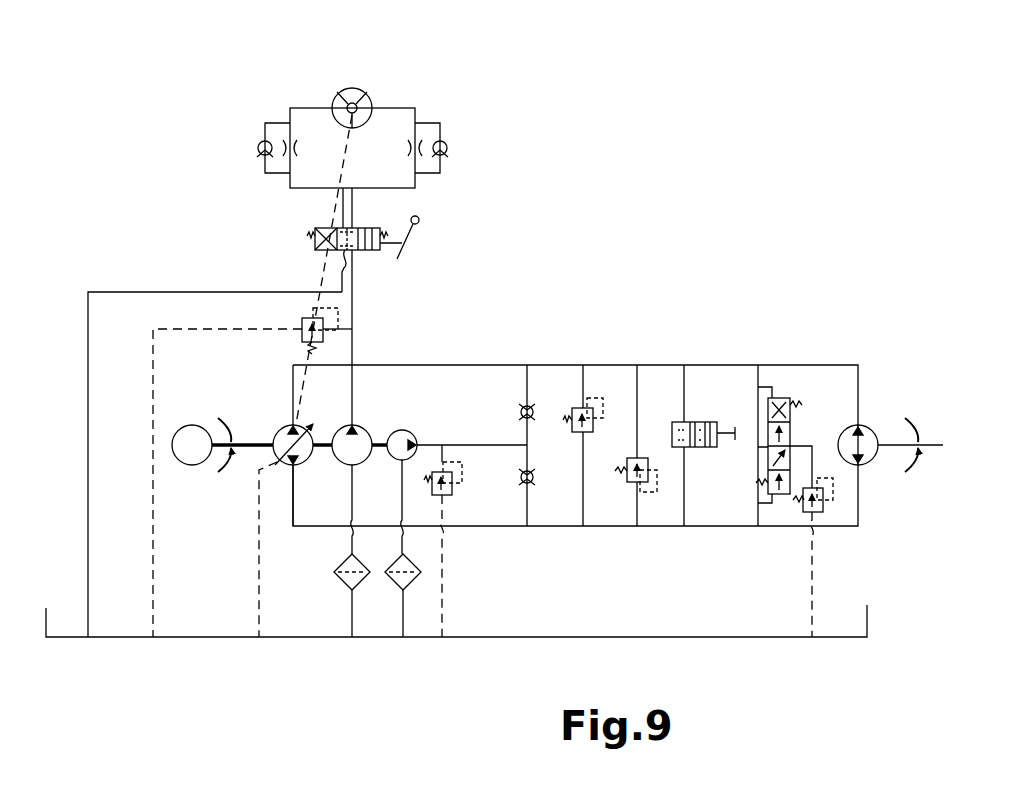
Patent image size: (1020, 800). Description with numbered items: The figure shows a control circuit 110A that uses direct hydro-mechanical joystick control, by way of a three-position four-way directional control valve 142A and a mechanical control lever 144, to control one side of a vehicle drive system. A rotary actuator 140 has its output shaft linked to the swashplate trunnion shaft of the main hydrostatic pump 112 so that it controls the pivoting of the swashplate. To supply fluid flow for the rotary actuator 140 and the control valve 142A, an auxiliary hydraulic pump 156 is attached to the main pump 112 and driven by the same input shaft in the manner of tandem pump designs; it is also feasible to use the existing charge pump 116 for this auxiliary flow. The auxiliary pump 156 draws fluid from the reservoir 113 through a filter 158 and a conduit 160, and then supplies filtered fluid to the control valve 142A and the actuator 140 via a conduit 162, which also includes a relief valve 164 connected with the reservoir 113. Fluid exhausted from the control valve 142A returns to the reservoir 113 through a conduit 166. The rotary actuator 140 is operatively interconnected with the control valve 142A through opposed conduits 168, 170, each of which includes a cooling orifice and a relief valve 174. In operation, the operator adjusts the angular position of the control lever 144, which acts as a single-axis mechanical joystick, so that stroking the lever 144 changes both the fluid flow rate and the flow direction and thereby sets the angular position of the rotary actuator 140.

The control circuit 110A is at (636, 258).
The hydrostatic pump 112 is at (280, 427).
The reservoir 113 is at (195, 637).
The charge pump 116 is at (413, 430).
The rotary actuator 140 is at (367, 103).
The three-position four-way directional control valve 142A is at (313, 240).
The control lever 144 is at (407, 235).
The auxiliary hydraulic pump 156 is at (365, 432).
The filter 158 is at (350, 583).
The conduit 160 is at (350, 500).
The conduit 162 is at (353, 310).
The relief valve 164 is at (307, 318).
The conduit 166 is at (88, 322).
The conduit 168 is at (398, 188).
The conduit 170 is at (305, 188).
The relief valve 174 is at (265, 130).